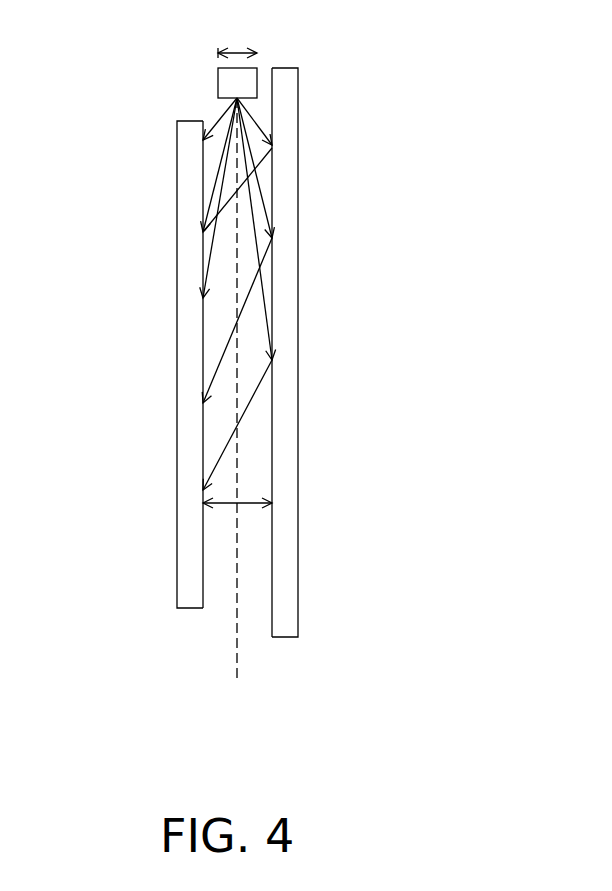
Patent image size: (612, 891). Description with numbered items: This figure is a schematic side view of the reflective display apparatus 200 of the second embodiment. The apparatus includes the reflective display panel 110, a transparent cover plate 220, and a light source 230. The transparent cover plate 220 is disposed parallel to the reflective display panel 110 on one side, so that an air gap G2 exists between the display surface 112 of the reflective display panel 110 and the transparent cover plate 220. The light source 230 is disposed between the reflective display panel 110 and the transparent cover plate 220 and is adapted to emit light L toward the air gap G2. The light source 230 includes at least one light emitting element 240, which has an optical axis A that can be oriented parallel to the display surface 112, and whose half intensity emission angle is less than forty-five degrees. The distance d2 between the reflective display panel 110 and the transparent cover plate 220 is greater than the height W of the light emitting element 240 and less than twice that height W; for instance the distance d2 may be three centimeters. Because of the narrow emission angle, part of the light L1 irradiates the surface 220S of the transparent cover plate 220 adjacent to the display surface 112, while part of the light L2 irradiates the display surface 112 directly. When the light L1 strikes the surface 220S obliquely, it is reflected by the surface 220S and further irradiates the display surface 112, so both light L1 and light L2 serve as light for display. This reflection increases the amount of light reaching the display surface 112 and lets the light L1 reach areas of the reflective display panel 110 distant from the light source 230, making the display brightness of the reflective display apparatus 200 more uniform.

The reflective display apparatus 200 is at (431, 709).
The reflective display panel 110 is at (187, 292).
The display surface 112 is at (206, 445).
The transparent cover plate 220 is at (287, 286).
The surface of the transparent cover plate 220S is at (270, 483).
The light emitting element 240 is at (222, 83).
The light source 230 is at (237, 83).
The height of the light emitting element W is at (238, 50).
The optical axis A is at (235, 408).
The light L is at (110, 150).
The light L1 is at (270, 216).
The light L2 is at (225, 167).
The air gap G2 is at (217, 332).
The distance d2 is at (222, 505).